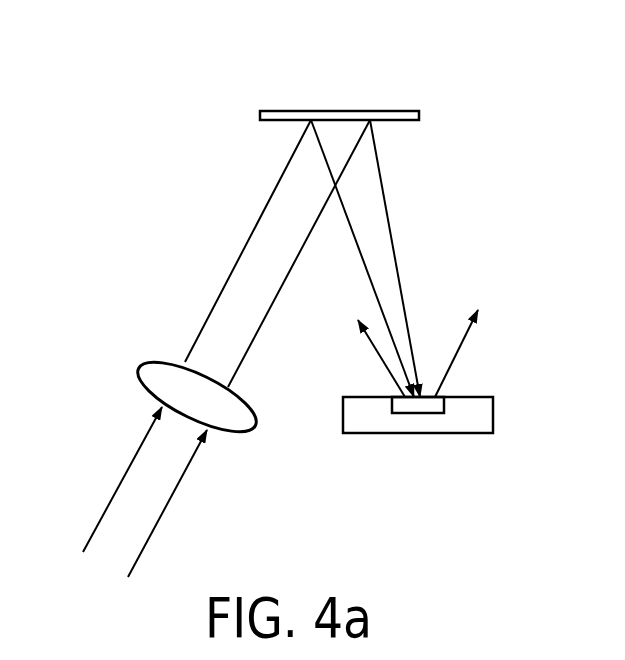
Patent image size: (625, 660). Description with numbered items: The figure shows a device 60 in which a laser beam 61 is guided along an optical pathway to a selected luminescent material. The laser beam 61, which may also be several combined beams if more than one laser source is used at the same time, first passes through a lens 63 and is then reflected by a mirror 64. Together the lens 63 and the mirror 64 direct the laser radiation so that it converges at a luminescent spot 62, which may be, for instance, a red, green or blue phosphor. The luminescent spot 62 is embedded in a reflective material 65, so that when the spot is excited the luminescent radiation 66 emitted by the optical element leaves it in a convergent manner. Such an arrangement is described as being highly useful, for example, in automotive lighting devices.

The device 60 is at (118, 63).
The laser beam 61 is at (167, 505).
The luminescent spot 62 is at (437, 413).
The lens 63 is at (137, 367).
The mirror 64 is at (260, 115).
The reflective material 65 is at (372, 433).
The luminescent radiation 66 is at (462, 350).